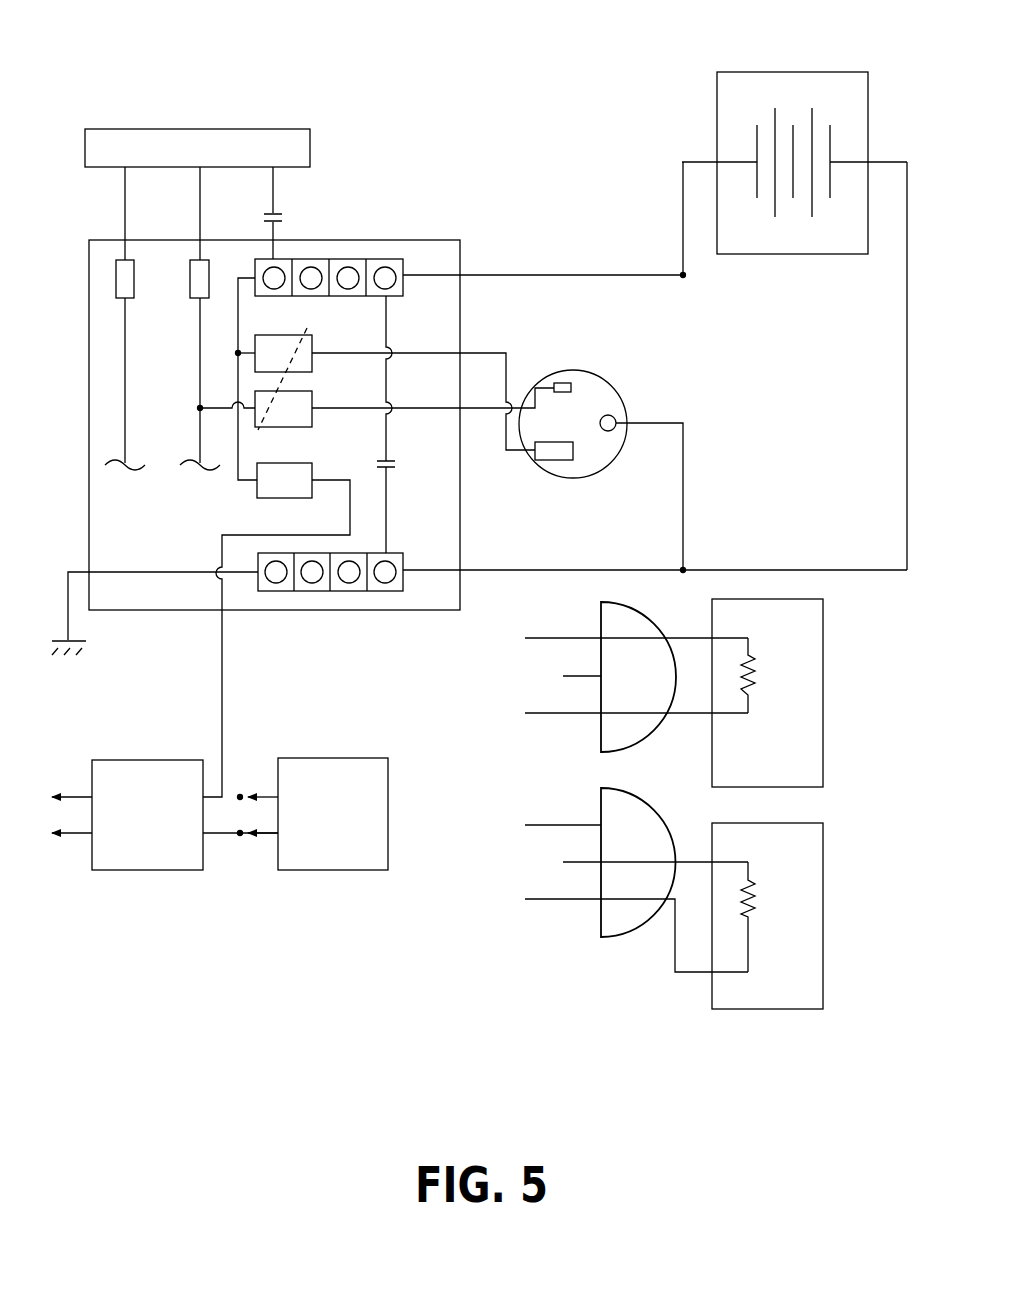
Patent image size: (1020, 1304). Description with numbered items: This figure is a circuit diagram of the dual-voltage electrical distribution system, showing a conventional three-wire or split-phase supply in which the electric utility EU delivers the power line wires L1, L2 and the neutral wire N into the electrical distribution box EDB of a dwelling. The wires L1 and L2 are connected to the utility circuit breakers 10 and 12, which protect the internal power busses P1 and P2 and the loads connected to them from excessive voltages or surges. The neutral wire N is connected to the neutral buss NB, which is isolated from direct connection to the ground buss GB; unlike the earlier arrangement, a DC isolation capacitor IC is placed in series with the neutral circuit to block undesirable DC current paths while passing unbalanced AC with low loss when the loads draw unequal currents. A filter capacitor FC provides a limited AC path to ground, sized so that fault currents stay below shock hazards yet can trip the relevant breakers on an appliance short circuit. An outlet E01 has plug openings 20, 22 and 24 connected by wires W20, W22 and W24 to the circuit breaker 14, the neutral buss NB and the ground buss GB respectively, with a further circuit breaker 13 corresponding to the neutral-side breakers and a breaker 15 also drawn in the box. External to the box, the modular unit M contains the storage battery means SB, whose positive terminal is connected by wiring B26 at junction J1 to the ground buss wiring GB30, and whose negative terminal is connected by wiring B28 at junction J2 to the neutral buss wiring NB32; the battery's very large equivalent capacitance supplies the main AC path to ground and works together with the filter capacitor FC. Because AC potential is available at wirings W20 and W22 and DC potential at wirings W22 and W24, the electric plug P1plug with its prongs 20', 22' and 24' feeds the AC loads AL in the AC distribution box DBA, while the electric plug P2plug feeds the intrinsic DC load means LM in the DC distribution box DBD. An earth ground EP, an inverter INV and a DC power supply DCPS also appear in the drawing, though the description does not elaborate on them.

The electric utility EU is at (318, 140).
The electrical distribution box EDB is at (463, 503).
The electric utility power line wire L1 is at (122, 232).
The electric utility power line wire L2 is at (197, 232).
The neutral wire N is at (270, 234).
The DC isolation capacitor IC is at (285, 219).
The circuit breaker 10 is at (116, 283).
The circuit breaker 12 is at (190, 283).
The circuit breaker 13 is at (272, 334).
The circuit breaker 14 is at (288, 429).
The contactor 15 is at (268, 500).
The neutral buss NB is at (372, 256).
The neutral buss wiring NB32 is at (532, 275).
The junction J2 is at (680, 274).
The junction J1 is at (905, 568).
The power buss P1 is at (128, 392).
The power buss P2 is at (197, 390).
The wire W22 is at (490, 350).
The wire W20 is at (423, 426).
The wire W24 is at (684, 452).
The filter capacitor FC is at (397, 466).
The outlet E01 is at (612, 380).
The plug opening 20 is at (558, 364).
The plug opening 22 is at (554, 480).
The plug opening 24 is at (633, 404).
The ground buss GB is at (352, 593).
The ground buss wiring GB30 is at (527, 567).
The wiring B26 is at (906, 455).
The wiring B28 is at (690, 161).
The basic modular unit M is at (790, 70).
The storage battery means SB is at (804, 242).
The earth potential ground EP is at (68, 628).
The inverter INV is at (68, 855).
The DC power supply DCPS is at (333, 757).
The AC distribution box DBA is at (828, 702).
The AC load means AL is at (765, 676).
The electric plug P1plug is at (655, 625).
The prong 20' is at (619, 624).
The prong 24' is at (560, 692).
The prong 22' is at (619, 730).
The DC distribution box DBD is at (828, 922).
The intrinsic DC load means LM is at (765, 903).
The electric plug P2plug is at (678, 800).